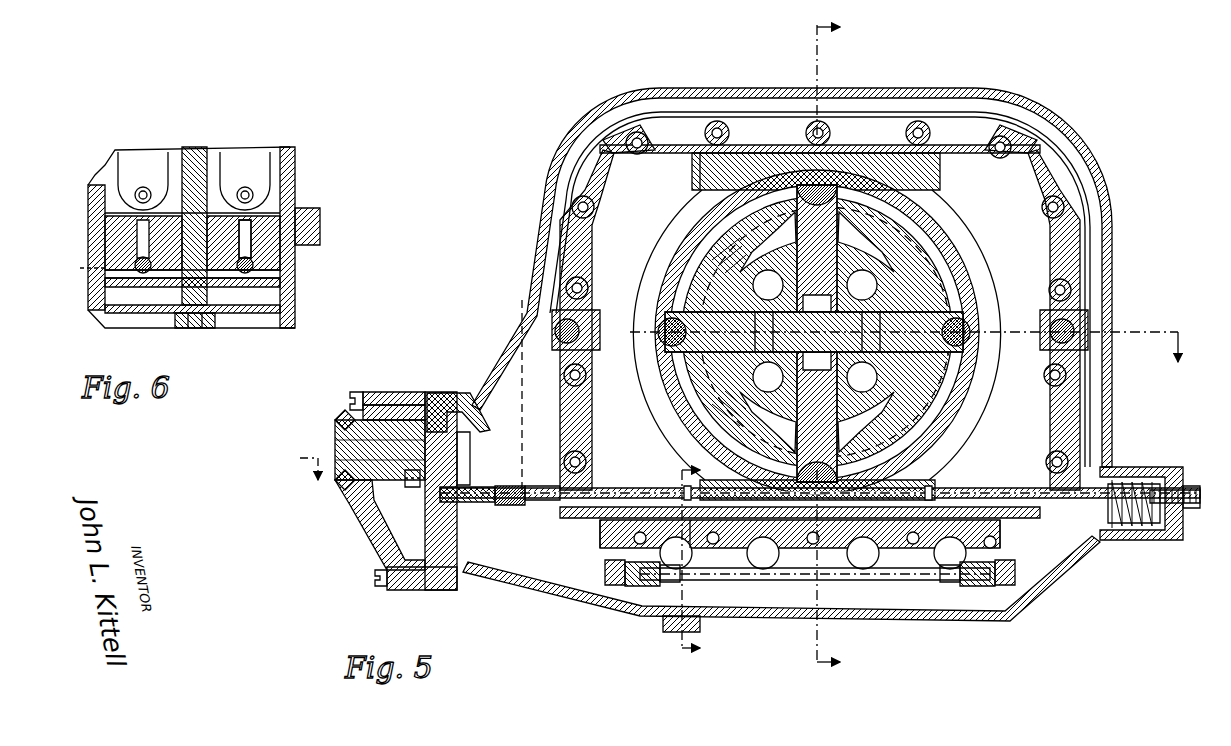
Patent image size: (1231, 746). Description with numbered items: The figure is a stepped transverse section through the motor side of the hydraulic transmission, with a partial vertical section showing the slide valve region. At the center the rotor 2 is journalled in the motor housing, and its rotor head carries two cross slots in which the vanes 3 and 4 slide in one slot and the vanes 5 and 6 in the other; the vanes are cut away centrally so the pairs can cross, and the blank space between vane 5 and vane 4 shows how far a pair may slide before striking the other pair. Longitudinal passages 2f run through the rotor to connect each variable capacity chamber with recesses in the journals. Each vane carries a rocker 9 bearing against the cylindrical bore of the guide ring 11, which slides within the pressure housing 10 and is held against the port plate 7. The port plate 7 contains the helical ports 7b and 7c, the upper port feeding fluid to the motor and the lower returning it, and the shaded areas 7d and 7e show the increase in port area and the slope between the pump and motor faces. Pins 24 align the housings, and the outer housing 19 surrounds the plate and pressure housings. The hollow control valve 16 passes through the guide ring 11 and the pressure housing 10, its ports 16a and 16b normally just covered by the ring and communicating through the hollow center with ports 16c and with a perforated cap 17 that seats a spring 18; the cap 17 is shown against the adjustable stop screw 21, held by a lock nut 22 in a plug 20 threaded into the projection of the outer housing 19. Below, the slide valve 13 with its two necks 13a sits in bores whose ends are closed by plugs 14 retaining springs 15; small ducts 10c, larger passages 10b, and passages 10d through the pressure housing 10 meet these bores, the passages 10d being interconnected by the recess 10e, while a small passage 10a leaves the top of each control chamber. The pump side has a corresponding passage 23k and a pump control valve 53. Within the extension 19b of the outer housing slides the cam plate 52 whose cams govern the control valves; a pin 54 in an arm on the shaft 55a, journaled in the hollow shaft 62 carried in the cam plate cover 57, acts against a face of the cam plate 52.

In FIG. 5, the rotor 2 is at (720, 368).
In FIG. 5, the longitudinal passages 2f is at (815, 331).
In FIG. 5, the vane 3 is at (739, 408).
In FIG. 5, the vane 4 is at (881, 345).
In FIG. 5, the vane 5 is at (822, 280).
In FIG. 5, the vane 6 is at (747, 514).
In FIG. 5, the port plate 7 is at (798, 332).
In FIG. 6, the port plate 7 is at (195, 150).
In FIG. 5, the port 7b is at (817, 239).
In FIG. 5, the port 7c is at (817, 425).
In FIG. 5, the shaded area 7d is at (729, 254).
In FIG. 5, the shaded area 7e is at (726, 411).
In FIG. 5, the rocker 9 is at (953, 318).
In FIG. 5, the pressure housing 10 is at (1035, 200).
In FIG. 5, the small diameter passage 10a is at (697, 150).
In FIG. 5, the passage 10b is at (716, 547).
In FIG. 6, the passage 10b is at (252, 222).
In FIG. 5, the small duct 10c is at (615, 535).
In FIG. 5, the passage 10d is at (945, 605).
In FIG. 6, the passage 10d is at (225, 290).
In FIG. 6, the recess 10e is at (282, 276).
In FIG. 5, the guide ring 11 is at (965, 268).
In FIG. 6, the guide ring 11 is at (232, 152).
In FIG. 5, the slide valve 13 is at (870, 583).
In FIG. 6, the slide valve 13 is at (282, 292).
In FIG. 5, the neck 13a is at (650, 588).
In FIG. 5, the plug 14 is at (603, 570).
In FIG. 5, the spring 15 is at (666, 585).
In FIG. 5, the control valve 16 is at (505, 486).
In FIG. 6, the control valve 16 is at (250, 188).
In FIG. 5, the port 16a is at (935, 490).
In FIG. 5, the port 16b is at (683, 470).
In FIG. 5, the port 16c is at (540, 505).
In FIG. 5, the cap 17 is at (1112, 540).
In FIG. 5, the spring 18 is at (1150, 530).
In FIG. 5, the outer housing 19 is at (1070, 560).
In FIG. 5, the extension 19b is at (462, 392).
In FIG. 5, the plug 20 is at (1178, 466).
In FIG. 5, the adjustable stop screw 21 is at (1198, 488).
In FIG. 5, the lock nut 22 is at (1190, 508).
In FIG. 6, the passage 23k is at (82, 270).
In FIG. 5, the pin 24 is at (555, 328).
In FIG. 5, the cam plate 52 is at (440, 535).
In FIG. 6, the control valve 53 is at (147, 188).
In FIG. 5, the pin 54 is at (405, 485).
In FIG. 5, the shaft 55a is at (336, 455).
In FIG. 5, the cam plate cover 57 is at (370, 522).
In FIG. 5, the hollow shaft 62 is at (336, 432).